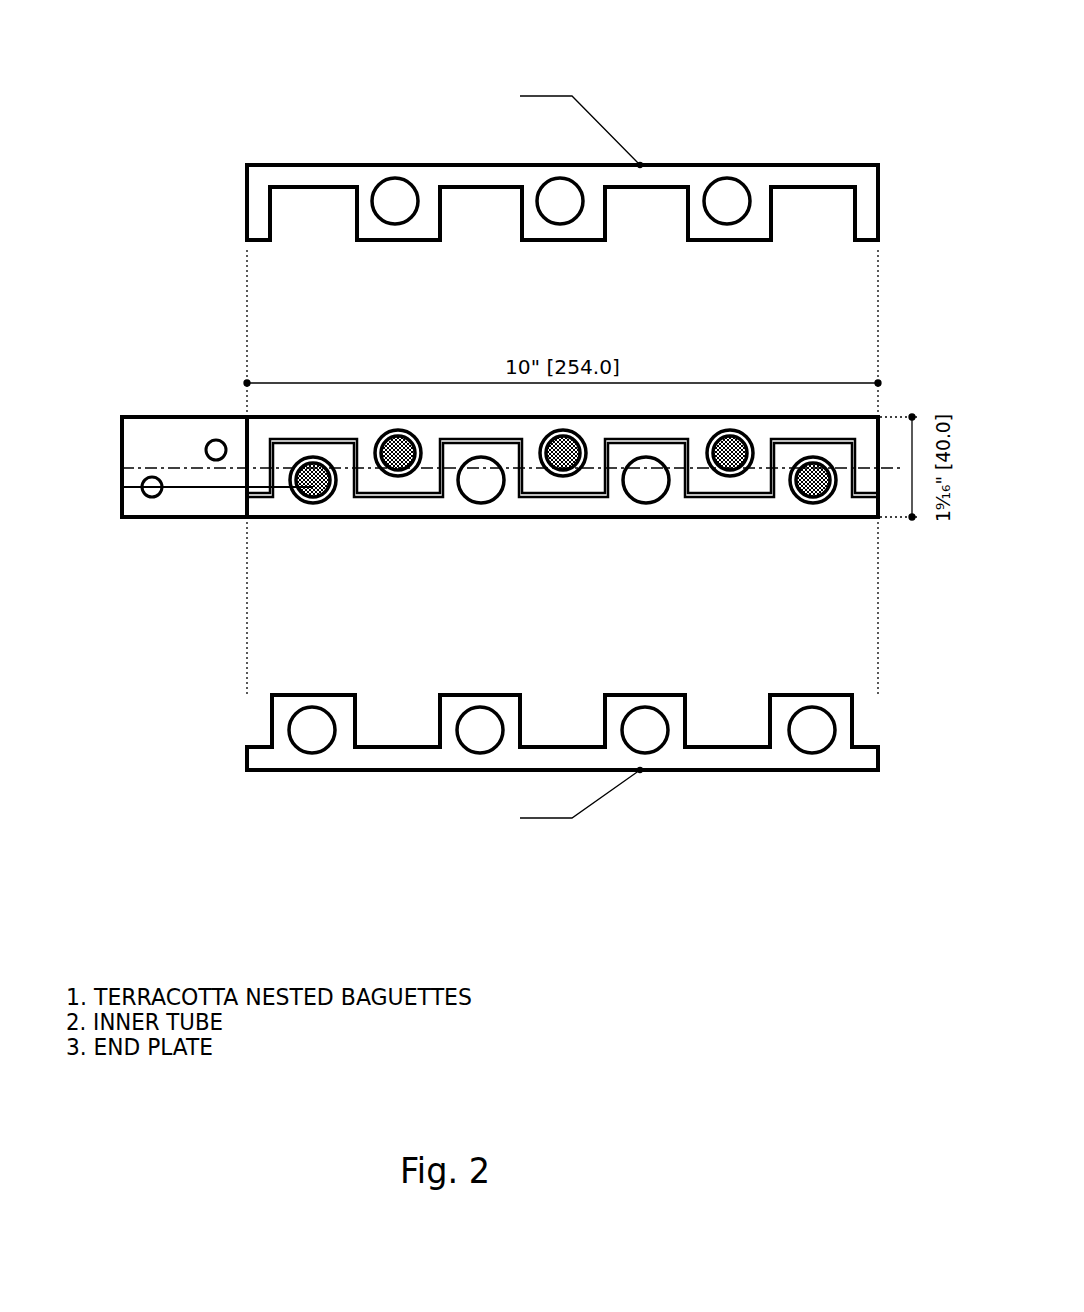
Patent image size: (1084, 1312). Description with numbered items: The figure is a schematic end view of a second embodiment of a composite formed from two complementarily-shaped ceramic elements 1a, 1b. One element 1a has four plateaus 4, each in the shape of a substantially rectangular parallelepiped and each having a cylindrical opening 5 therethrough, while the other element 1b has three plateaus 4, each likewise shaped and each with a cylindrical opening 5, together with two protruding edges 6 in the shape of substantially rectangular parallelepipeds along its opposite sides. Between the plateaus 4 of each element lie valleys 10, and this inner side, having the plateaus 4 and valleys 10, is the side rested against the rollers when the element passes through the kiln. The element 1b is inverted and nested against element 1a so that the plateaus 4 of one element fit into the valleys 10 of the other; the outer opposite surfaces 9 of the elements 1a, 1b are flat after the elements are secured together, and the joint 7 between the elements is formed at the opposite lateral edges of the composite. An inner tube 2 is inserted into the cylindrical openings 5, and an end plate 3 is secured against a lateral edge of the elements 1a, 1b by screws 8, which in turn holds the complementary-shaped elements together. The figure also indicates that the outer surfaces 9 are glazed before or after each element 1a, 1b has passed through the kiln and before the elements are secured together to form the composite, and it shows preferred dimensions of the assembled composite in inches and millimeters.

The ceramic element 1a is at (247, 753).
The ceramic element 1b is at (247, 198).
The inner tube 2 is at (122, 487).
The end plate 3 is at (122, 436).
The plateau 4 is at (380, 243).
The cylindrical opening 5 is at (551, 459).
The protruding edge 6 is at (908, 202).
The joint 7 is at (245, 495).
The screw 8 is at (563, 529).
The outer surface 9 is at (562, 481).
The valley 10 is at (310, 193).